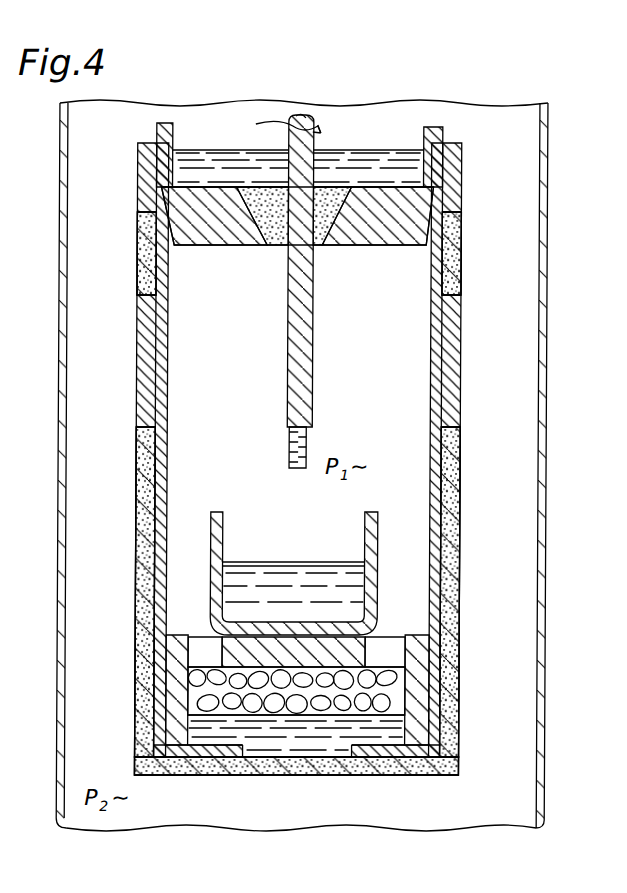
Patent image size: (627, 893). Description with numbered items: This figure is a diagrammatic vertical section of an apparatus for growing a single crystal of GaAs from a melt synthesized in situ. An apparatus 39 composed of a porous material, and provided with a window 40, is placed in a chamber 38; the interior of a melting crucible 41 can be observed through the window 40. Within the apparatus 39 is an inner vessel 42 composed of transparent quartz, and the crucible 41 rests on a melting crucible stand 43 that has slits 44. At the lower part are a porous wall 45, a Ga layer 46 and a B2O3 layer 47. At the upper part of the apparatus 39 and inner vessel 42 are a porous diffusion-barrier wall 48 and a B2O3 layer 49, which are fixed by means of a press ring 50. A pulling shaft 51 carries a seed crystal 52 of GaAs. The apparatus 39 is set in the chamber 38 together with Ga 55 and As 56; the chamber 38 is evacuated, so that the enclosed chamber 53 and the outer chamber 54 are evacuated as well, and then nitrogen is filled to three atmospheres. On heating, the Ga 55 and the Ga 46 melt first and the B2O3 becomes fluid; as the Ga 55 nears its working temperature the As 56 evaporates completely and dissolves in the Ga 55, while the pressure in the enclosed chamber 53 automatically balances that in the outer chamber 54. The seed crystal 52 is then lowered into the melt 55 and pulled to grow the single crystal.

The chamber 38 is at (548, 213).
The apparatus 39 is at (462, 257).
The window 40 is at (140, 356).
The melting crucible 41 is at (218, 535).
The inner vessel 42 is at (438, 478).
The melting crucible stand 43 is at (418, 652).
The slits 44 is at (205, 648).
The porous wall 45 is at (267, 765).
The Ga layer 46 is at (287, 750).
The B2O3 layer 47 is at (365, 727).
The porous diffusion-barrier wall 48 is at (320, 207).
The B2O3 layer 49 is at (383, 170).
The press ring 50 is at (443, 138).
The pulling shaft 51 is at (271, 127).
The seed crystal 52 is at (290, 453).
The enclosed chamber 53 is at (400, 379).
The outer chamber 54 is at (506, 778).
The Ga 55 is at (338, 540).
The As 56 is at (393, 682).